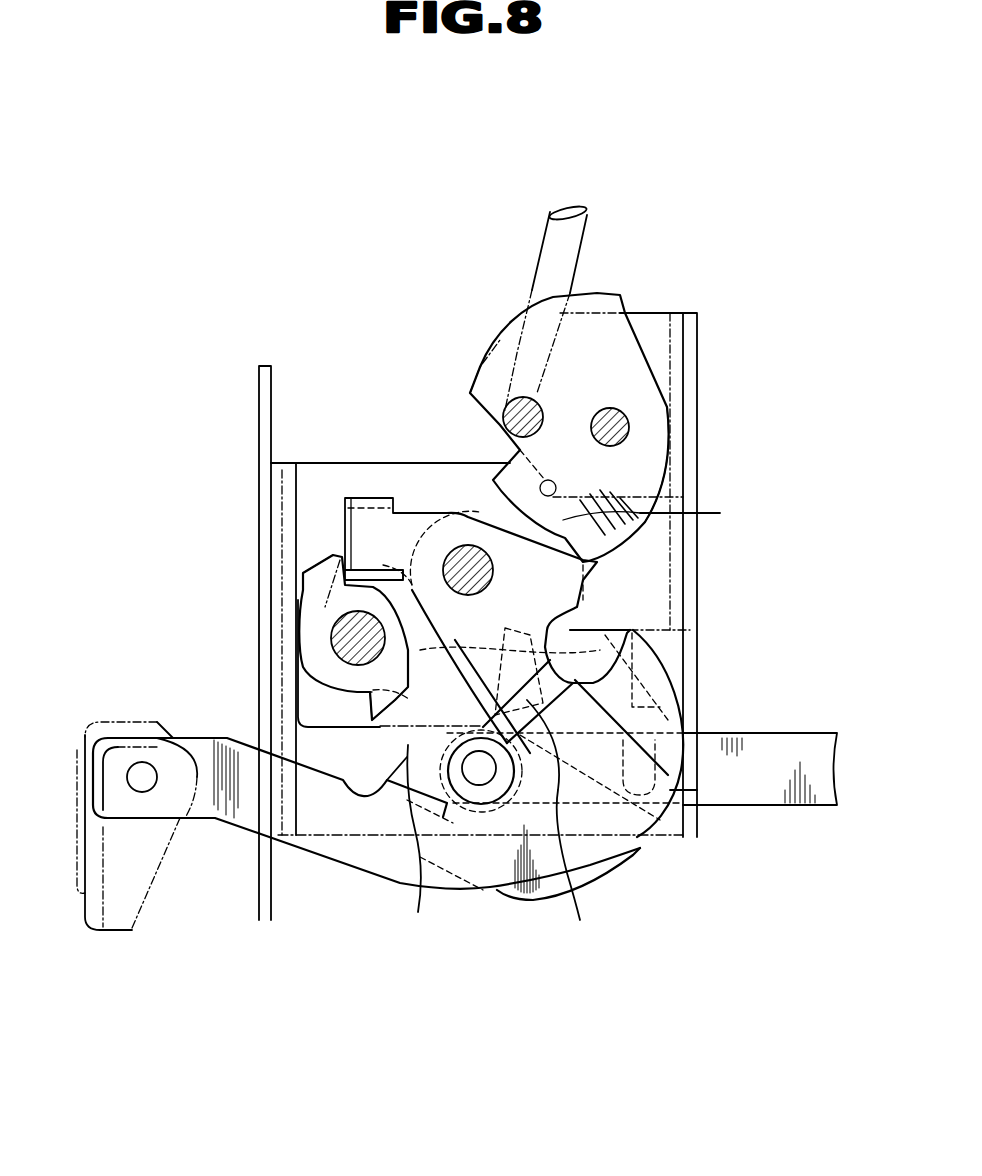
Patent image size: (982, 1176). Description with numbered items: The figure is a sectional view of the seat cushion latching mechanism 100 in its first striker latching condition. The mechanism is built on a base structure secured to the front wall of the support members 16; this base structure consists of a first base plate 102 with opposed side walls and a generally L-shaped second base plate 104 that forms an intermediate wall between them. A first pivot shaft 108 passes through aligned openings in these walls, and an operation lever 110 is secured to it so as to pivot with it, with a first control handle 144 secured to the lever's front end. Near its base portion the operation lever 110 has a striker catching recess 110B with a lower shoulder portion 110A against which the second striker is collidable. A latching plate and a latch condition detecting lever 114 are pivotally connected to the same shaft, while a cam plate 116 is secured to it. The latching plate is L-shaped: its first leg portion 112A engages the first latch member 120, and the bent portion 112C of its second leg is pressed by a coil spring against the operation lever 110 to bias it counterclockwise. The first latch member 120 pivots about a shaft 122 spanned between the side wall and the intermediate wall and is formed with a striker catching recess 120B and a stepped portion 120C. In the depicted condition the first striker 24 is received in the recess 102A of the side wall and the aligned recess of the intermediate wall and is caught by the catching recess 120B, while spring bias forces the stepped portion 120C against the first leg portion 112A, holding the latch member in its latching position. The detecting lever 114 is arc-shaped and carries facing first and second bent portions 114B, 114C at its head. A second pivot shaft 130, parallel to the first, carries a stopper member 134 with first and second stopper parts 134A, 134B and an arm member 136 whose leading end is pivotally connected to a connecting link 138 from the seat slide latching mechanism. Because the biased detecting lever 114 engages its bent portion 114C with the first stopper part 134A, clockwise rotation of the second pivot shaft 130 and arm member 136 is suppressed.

The seat cushion latching mechanism 100 is at (694, 163).
The support member 16 is at (258, 388).
The first striker 24 is at (565, 215).
The first base plate 102 is at (275, 680).
The recess 102A is at (480, 380).
The second base plate 104 is at (275, 475).
The first pivot shaft 108 is at (462, 555).
The operation lever 110 is at (218, 828).
The lower shoulder portion 110A is at (656, 680).
The striker catching recess 110B is at (577, 607).
The first leg portion 112A is at (722, 517).
The bent portion 112C is at (580, 920).
The latch condition detecting lever 114 is at (690, 697).
The first bent portion 114B is at (372, 497).
The second bent portion 114C is at (352, 575).
The cam plate 116 is at (535, 895).
The first latch member 120 is at (620, 340).
The striker catching recess 120B is at (535, 395).
The stepped portion 120C is at (640, 495).
The shaft 122 is at (628, 413).
The second pivot shaft 130 is at (330, 640).
The stopper member 134 is at (327, 602).
The first stopper part 134A is at (333, 560).
The second stopper part 134B is at (367, 710).
The arm member 136 is at (413, 842).
The connecting link 138 is at (767, 790).
The first control handle 144 is at (102, 930).